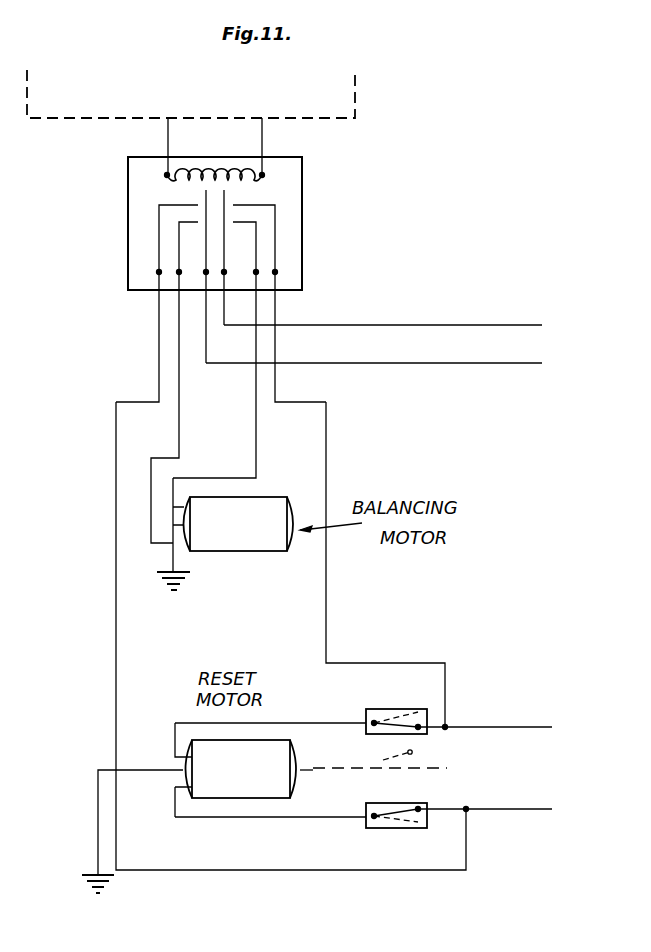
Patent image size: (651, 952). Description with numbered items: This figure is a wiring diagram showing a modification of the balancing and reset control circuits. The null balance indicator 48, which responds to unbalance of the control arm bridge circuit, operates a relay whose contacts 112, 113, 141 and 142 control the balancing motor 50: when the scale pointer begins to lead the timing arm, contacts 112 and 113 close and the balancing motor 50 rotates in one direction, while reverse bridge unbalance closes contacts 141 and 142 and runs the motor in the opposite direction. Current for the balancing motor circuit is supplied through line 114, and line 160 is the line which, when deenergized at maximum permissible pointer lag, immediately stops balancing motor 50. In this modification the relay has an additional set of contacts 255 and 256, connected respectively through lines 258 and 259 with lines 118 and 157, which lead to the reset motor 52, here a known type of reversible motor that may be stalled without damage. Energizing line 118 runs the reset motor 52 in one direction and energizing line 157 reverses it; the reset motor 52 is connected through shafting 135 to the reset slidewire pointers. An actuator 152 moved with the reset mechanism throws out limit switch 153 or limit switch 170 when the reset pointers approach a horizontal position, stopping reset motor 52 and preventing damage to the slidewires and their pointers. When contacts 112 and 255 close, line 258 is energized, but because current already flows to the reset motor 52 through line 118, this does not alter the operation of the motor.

The null balance indicator 48 is at (358, 88).
The relay contact 255 is at (262, 205).
The relay contact 256 is at (165, 205).
The relay contact 141 is at (179, 230).
The relay contact 142 is at (206, 245).
The relay contact 112 is at (224, 243).
The relay contact 113 is at (256, 258).
The line 114 is at (490, 305).
The line 160 is at (490, 363).
The line 259 is at (116, 585).
The line 258 is at (330, 596).
The balancing motor 50 is at (238, 552).
The reset motor 52 is at (270, 800).
The limit switch 153 is at (381, 709).
The limit switch 170 is at (398, 828).
The actuator 152 is at (385, 761).
The shafting 135 is at (447, 768).
The line 118 is at (478, 727).
The line 157 is at (500, 809).